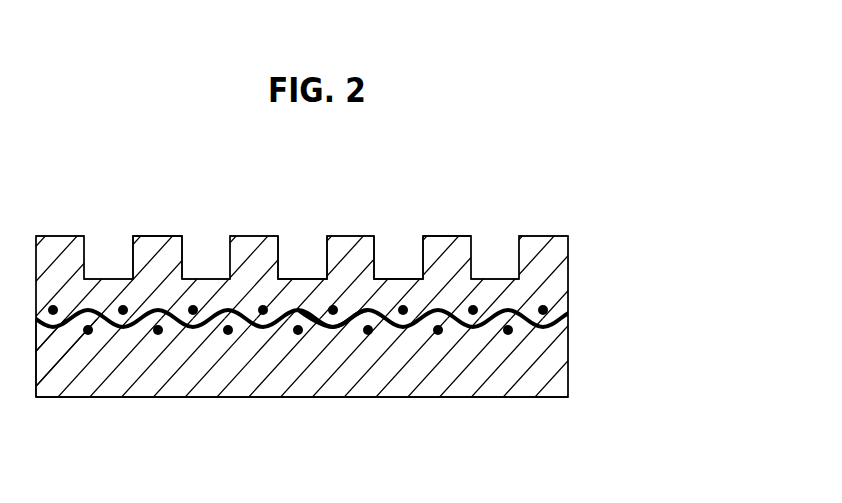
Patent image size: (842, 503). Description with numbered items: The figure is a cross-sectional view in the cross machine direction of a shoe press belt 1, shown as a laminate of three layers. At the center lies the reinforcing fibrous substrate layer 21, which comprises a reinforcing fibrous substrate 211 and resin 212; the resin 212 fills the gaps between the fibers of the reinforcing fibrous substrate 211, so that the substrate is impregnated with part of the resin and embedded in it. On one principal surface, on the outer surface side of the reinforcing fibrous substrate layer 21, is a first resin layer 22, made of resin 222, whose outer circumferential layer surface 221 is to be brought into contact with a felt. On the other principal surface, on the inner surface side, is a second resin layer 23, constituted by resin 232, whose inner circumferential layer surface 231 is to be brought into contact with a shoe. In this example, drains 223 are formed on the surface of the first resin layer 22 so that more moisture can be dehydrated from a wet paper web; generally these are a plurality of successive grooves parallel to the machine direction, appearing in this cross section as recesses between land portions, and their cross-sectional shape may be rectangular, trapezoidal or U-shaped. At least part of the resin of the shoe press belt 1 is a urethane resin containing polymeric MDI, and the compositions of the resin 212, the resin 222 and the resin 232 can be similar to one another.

The shoe press belt 1 is at (585, 203).
The reinforcing fibrous substrate layer 21 is at (568, 317).
The reinforcing fibrous substrate 211 is at (356, 322).
The resin 212 is at (296, 331).
The first resin layer 22 is at (540, 272).
The outer circumferential layer surface 221 is at (165, 238).
The resin 222 is at (478, 238).
The drains 223 is at (300, 247).
The second resin layer 23 is at (547, 367).
The inner circumferential layer surface 231 is at (207, 397).
The resin 232 is at (123, 373).